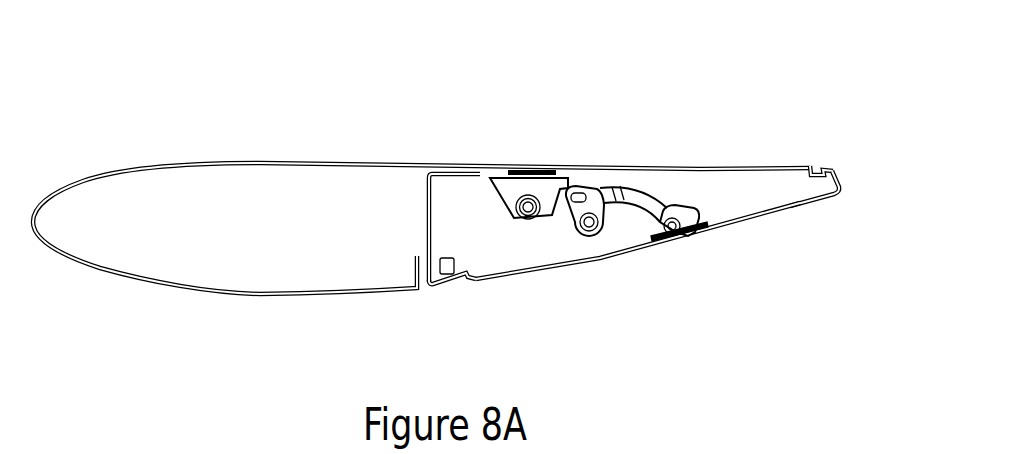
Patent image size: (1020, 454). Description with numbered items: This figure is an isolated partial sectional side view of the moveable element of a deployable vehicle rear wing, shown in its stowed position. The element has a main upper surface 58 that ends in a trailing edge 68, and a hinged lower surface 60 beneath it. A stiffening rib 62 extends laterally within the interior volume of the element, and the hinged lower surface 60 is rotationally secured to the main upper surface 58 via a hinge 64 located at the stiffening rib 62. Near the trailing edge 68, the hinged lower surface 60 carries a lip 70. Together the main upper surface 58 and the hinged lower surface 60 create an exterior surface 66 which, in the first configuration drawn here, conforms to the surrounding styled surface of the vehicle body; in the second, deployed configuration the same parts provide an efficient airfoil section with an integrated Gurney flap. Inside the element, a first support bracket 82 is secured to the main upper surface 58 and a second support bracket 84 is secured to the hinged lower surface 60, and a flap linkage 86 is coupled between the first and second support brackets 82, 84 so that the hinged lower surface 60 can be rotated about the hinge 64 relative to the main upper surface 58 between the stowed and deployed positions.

The main upper surface 58 is at (303, 160).
The hinged lower surface 60 is at (620, 258).
The stiffening rib 62 is at (427, 209).
The hinge 64 is at (480, 280).
The exterior surface 66 is at (148, 163).
The trailing edge 68 is at (808, 166).
The lip 70 is at (840, 177).
The first support bracket 82 is at (510, 176).
The second support bracket 84 is at (693, 224).
The flap linkage 86 is at (613, 174).